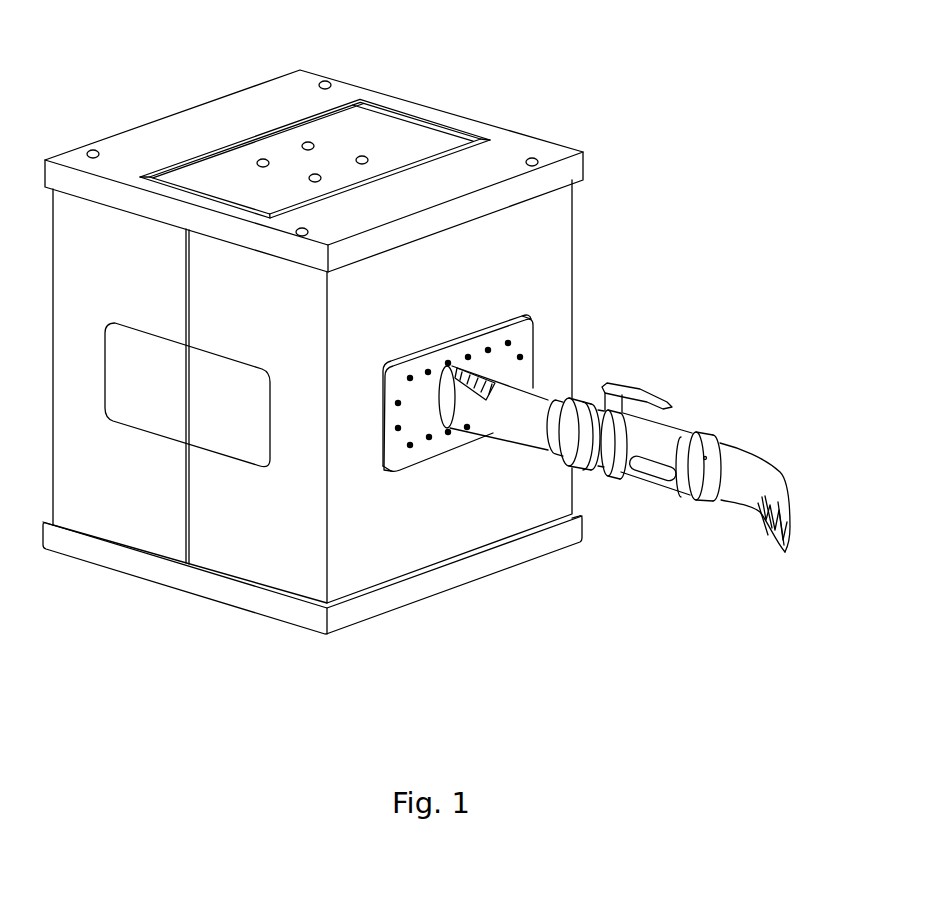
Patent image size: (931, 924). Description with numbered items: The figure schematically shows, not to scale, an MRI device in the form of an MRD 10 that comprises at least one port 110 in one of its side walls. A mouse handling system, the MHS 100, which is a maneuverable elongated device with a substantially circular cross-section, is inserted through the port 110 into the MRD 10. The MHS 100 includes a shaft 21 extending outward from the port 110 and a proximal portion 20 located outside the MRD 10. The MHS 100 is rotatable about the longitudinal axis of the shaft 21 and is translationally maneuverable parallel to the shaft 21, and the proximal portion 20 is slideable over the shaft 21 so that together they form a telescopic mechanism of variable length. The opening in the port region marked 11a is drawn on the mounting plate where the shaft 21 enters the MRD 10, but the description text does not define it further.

The MRD 10 is at (313, 352).
The port 110 is at (533, 321).
The through holes 11a is at (416, 415).
The shaft 21 is at (510, 417).
The proximal portion 20 is at (655, 432).
The mouse handling system 100 is at (715, 421).